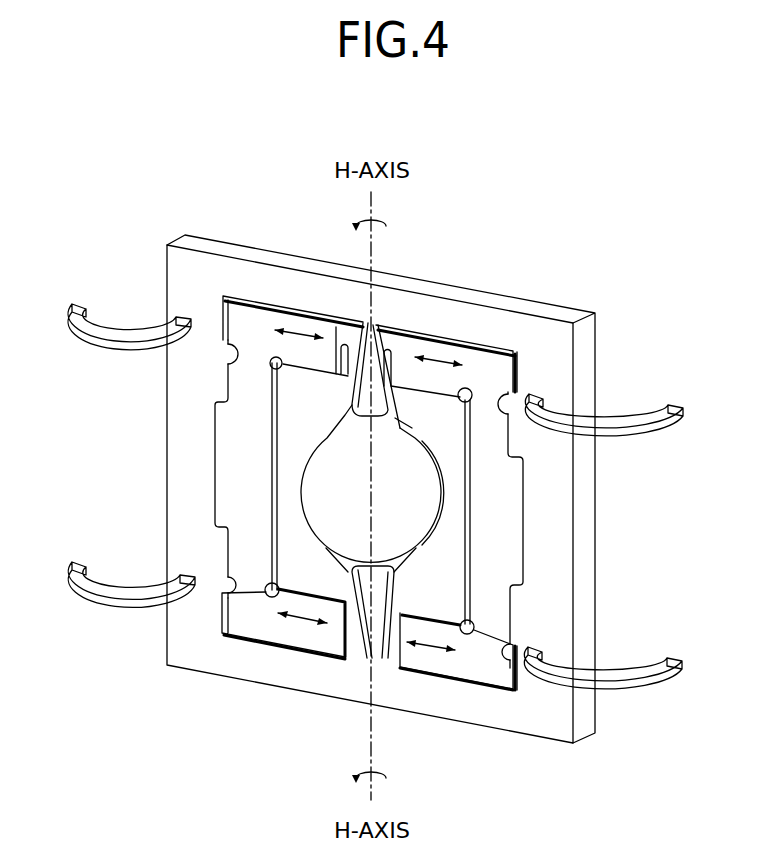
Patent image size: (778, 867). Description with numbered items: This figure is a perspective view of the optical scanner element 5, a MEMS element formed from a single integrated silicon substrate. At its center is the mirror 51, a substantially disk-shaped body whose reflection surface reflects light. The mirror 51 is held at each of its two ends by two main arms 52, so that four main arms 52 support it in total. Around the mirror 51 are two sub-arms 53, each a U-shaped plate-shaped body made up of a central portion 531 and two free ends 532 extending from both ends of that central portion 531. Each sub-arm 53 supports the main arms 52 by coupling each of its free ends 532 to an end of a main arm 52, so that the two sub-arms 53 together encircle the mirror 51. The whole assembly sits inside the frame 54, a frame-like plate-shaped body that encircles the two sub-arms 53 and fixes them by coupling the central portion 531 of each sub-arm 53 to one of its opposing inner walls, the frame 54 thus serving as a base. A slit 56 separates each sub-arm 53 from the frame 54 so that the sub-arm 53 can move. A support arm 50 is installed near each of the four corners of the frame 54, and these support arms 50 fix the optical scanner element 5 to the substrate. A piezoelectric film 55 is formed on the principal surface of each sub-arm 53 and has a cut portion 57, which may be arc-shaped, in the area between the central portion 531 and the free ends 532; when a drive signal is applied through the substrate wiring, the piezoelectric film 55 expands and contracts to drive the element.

The optical scanner element 5 is at (618, 262).
The support arm 50 is at (77, 303).
The mirror 51 is at (412, 517).
The main arm 52 is at (335, 365).
The sub-arm 53 is at (270, 468).
The central portion 531 is at (228, 497).
The free end 532 is at (257, 318).
The frame 54 is at (223, 265).
The piezoelectric film 55 is at (228, 415).
The slit 56 is at (520, 366).
The cut portion 57 is at (222, 312).